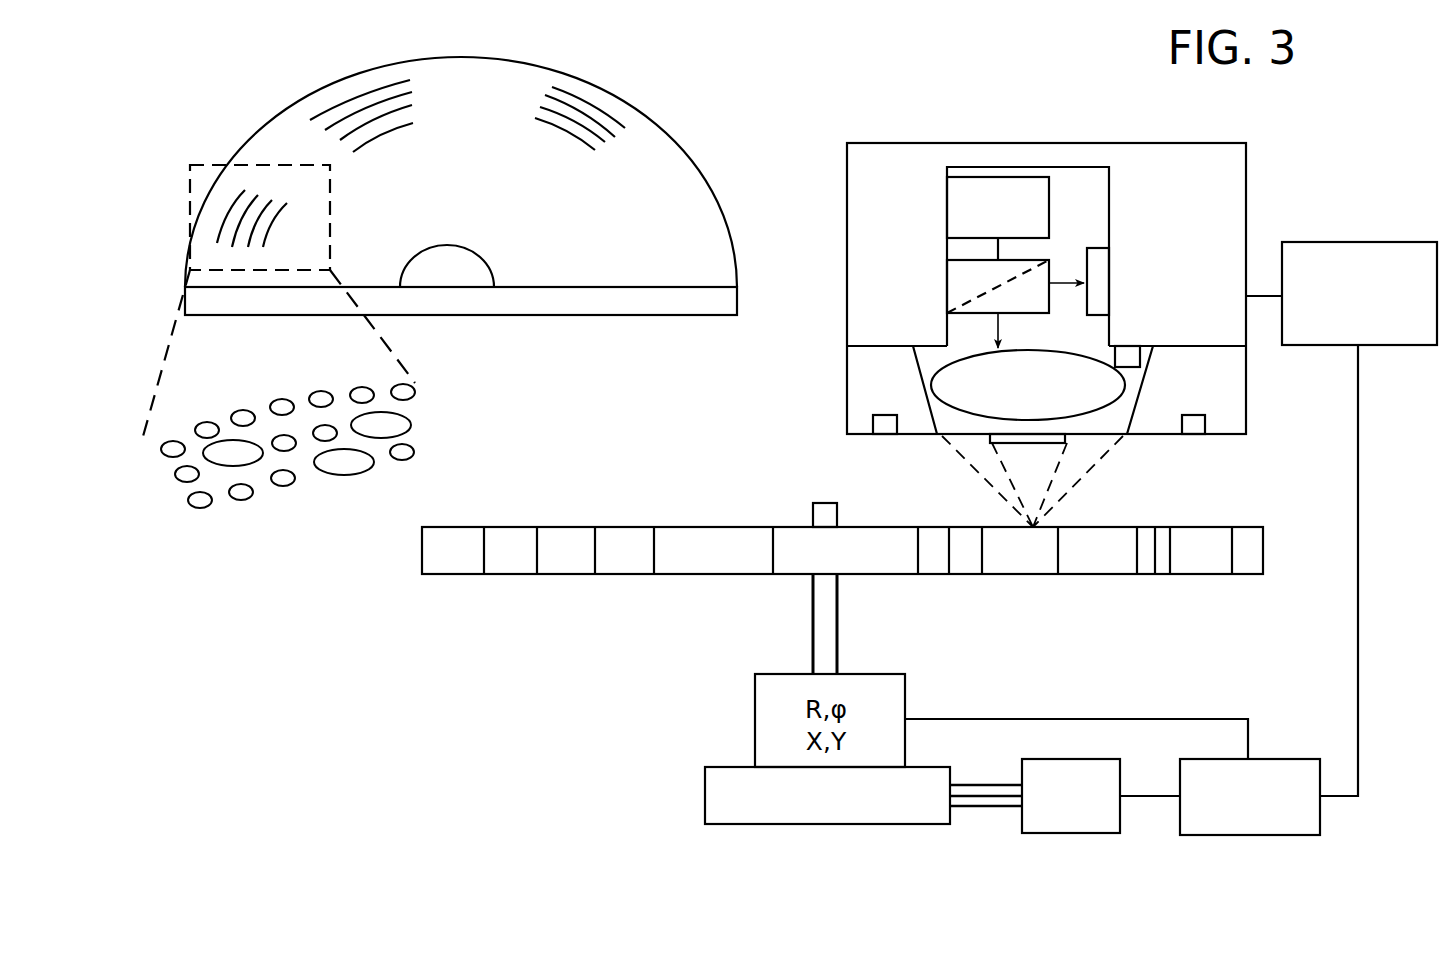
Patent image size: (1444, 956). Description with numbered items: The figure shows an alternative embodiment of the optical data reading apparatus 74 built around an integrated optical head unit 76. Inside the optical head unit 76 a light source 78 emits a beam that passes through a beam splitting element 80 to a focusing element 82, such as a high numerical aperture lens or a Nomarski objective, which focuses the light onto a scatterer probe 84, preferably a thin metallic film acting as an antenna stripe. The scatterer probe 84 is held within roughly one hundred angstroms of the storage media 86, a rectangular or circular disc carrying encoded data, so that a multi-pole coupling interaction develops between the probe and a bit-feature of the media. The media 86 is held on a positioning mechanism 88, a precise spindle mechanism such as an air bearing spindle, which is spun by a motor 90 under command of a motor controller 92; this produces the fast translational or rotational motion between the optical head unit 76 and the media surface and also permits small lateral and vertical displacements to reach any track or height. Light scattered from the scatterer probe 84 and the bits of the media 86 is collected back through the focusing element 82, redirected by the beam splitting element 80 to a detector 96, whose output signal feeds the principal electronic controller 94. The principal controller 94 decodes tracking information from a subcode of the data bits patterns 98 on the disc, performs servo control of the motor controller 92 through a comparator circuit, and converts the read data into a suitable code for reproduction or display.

The apparatus 74 is at (456, 740).
The optical head unit 76 is at (1066, 133).
The light source 78 is at (1050, 216).
The beam splitting element 80 is at (1030, 313).
The focusing element 82 is at (1013, 400).
The scatterer probe 84 is at (1040, 450).
The storage media 86 is at (711, 525).
The positioning mechanism 88 is at (705, 795).
The motor 90 is at (1073, 833).
The motor controller 92 is at (1252, 835).
The principal electronic controller 94 is at (1362, 242).
The detector 96 is at (1103, 278).
The data bits patterns 98 is at (294, 498).